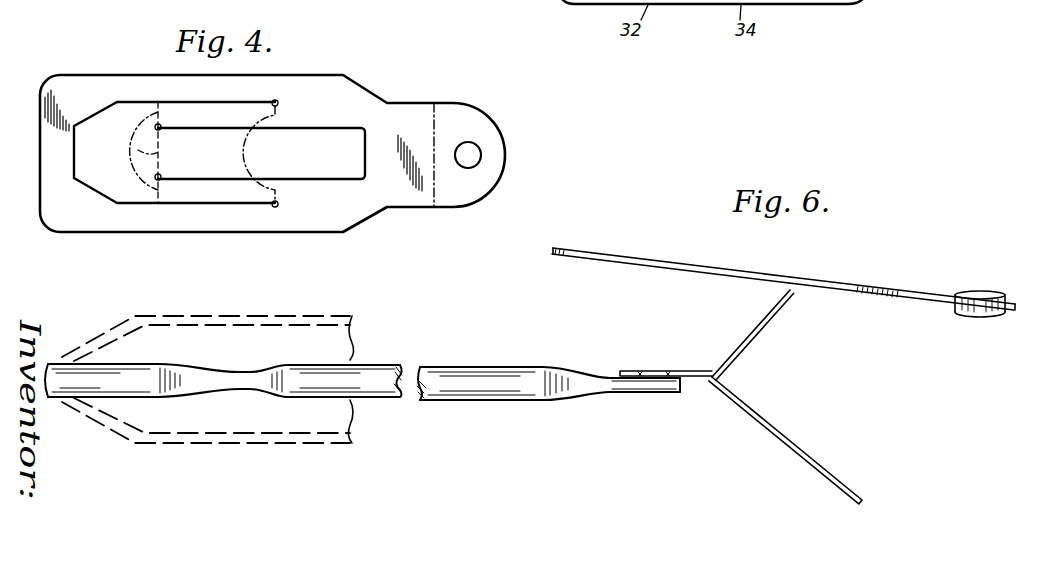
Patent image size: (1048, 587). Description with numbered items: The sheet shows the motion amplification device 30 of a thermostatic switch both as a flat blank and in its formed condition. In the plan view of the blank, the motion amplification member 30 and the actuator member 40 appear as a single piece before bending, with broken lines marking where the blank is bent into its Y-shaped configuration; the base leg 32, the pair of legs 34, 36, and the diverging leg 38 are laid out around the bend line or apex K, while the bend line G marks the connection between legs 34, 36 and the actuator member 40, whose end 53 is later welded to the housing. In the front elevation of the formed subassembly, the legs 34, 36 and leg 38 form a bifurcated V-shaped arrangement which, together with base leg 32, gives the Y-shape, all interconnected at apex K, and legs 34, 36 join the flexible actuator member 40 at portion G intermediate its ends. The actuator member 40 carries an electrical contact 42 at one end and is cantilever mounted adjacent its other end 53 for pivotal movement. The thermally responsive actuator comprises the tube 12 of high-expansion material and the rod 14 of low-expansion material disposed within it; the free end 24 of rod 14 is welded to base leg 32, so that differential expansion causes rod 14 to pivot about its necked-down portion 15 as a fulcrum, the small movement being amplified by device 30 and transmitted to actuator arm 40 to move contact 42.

In FIG. 6, the tube 12 is at (238, 323).
In FIG. 6, the rod 14 is at (380, 378).
In FIG. 6, the necked-down portion 15 is at (223, 378).
In FIG. 6, the free end 24 is at (606, 378).
In FIG. 4, the motion amplification device 30 is at (405, 84).
In FIG. 6, the motion amplification device 30 is at (743, 342).
In FIG. 4, the base leg 32 is at (84, 165).
In FIG. 6, the base leg 32 is at (654, 370).
In FIG. 4, the leg 34 is at (188, 193).
In FIG. 6, the leg 34 is at (760, 328).
In FIG. 4, the leg 36 is at (203, 112).
In FIG. 4, the leg 38 is at (286, 138).
In FIG. 6, the leg 38 is at (773, 428).
In FIG. 4, the flexible actuator member 40 is at (322, 79).
In FIG. 6, the flexible actuator member 40 is at (817, 283).
In FIG. 6, the electrical contact 42 is at (982, 293).
In FIG. 4, the end of actuator member 53 is at (58, 116).
In FIG. 6, the end of actuator member 53 is at (580, 250).
In FIG. 4, the bend line or apex K is at (139, 151).
In FIG. 6, the bend line or apex K is at (710, 381).
In FIG. 4, the bend line G is at (259, 153).
In FIG. 6, the bend line G is at (792, 292).